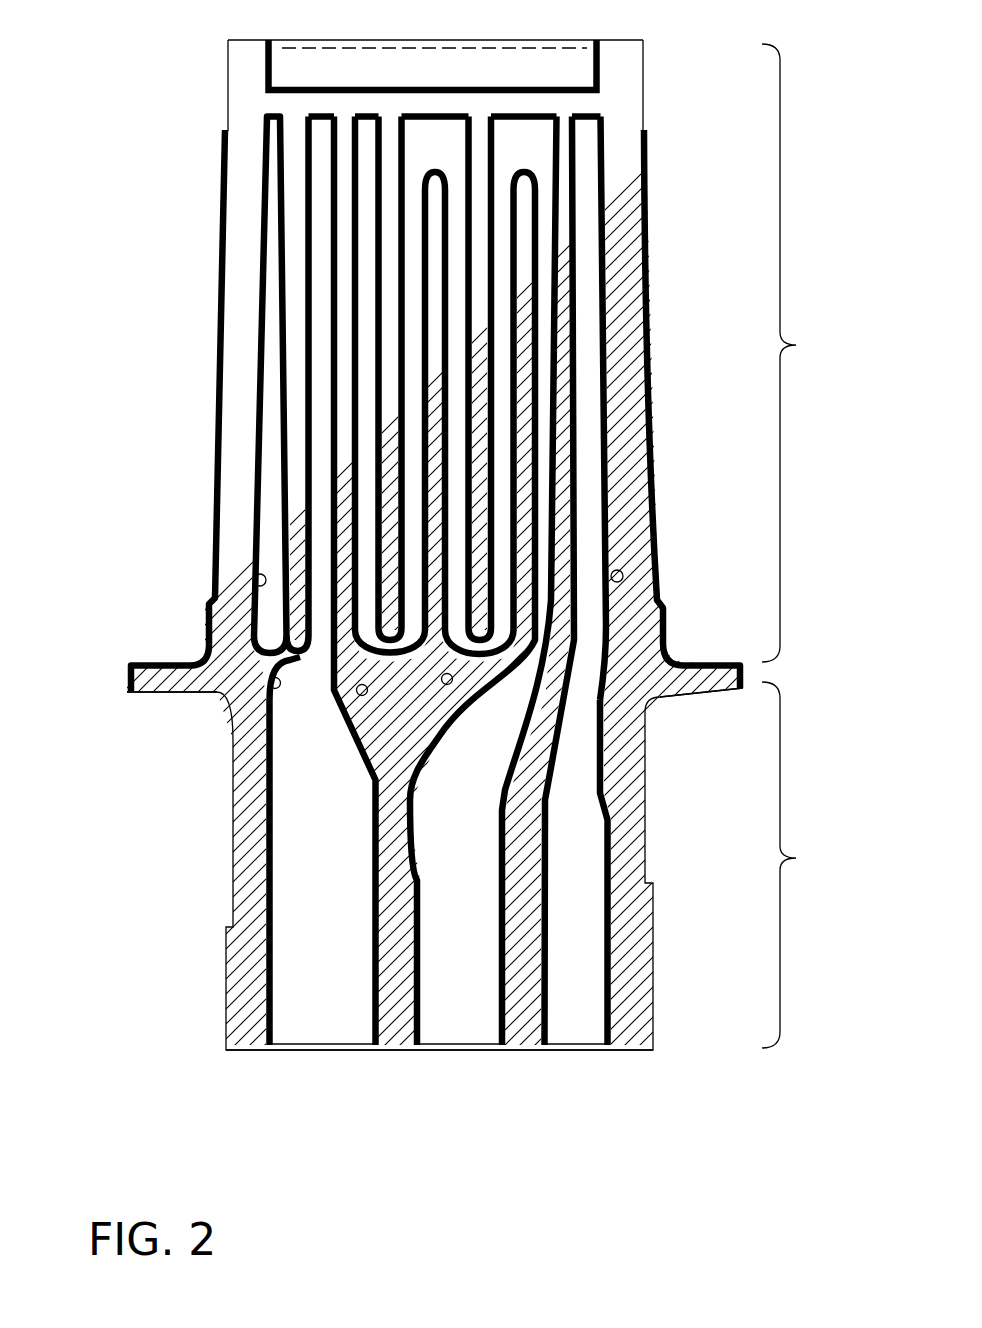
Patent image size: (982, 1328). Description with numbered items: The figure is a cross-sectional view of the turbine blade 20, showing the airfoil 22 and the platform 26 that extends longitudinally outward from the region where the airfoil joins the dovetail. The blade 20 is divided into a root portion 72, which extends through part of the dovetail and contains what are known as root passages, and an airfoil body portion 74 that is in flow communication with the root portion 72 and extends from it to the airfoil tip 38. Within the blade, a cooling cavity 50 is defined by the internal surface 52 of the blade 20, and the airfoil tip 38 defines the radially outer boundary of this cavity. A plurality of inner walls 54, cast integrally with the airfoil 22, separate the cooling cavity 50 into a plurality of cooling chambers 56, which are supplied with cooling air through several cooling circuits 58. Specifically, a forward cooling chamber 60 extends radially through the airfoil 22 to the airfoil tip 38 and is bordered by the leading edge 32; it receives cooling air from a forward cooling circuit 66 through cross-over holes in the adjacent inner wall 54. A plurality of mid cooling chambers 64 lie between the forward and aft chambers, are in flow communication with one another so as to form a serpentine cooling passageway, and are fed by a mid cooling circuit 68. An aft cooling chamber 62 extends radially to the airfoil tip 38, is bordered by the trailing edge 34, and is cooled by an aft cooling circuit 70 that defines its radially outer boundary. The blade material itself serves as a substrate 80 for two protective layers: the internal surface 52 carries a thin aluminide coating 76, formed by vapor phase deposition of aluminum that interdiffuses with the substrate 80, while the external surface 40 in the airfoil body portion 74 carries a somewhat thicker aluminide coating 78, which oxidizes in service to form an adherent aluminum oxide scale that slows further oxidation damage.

The turbine blade 20 is at (128, 285).
The airfoil 22 is at (222, 398).
The platform 26 is at (160, 660).
The leading edge 32 is at (215, 560).
The trailing edge 34 is at (656, 482).
The airfoil tip 38 is at (283, 60).
The external surface 40 is at (646, 147).
The cooling cavity 50 is at (596, 383).
The internal surface 52 is at (256, 584).
The inner walls 54 is at (408, 195).
The cooling chambers 56 is at (430, 130).
The cooling circuits 58 is at (444, 1145).
The forward cooling chamber 60 is at (270, 363).
The aft cooling chamber 62 is at (602, 452).
The mid cooling chambers 64 is at (503, 133).
The forward cooling circuit 66 is at (323, 1062).
The mid cooling circuit 68 is at (455, 1062).
The aft cooling circuit 70 is at (580, 1062).
The root portion 72 is at (800, 858).
The airfoil body portion 74 is at (800, 345).
The aluminide coating 76 is at (272, 870).
The aluminide coating 78 is at (648, 192).
The substrate 80 is at (230, 486).